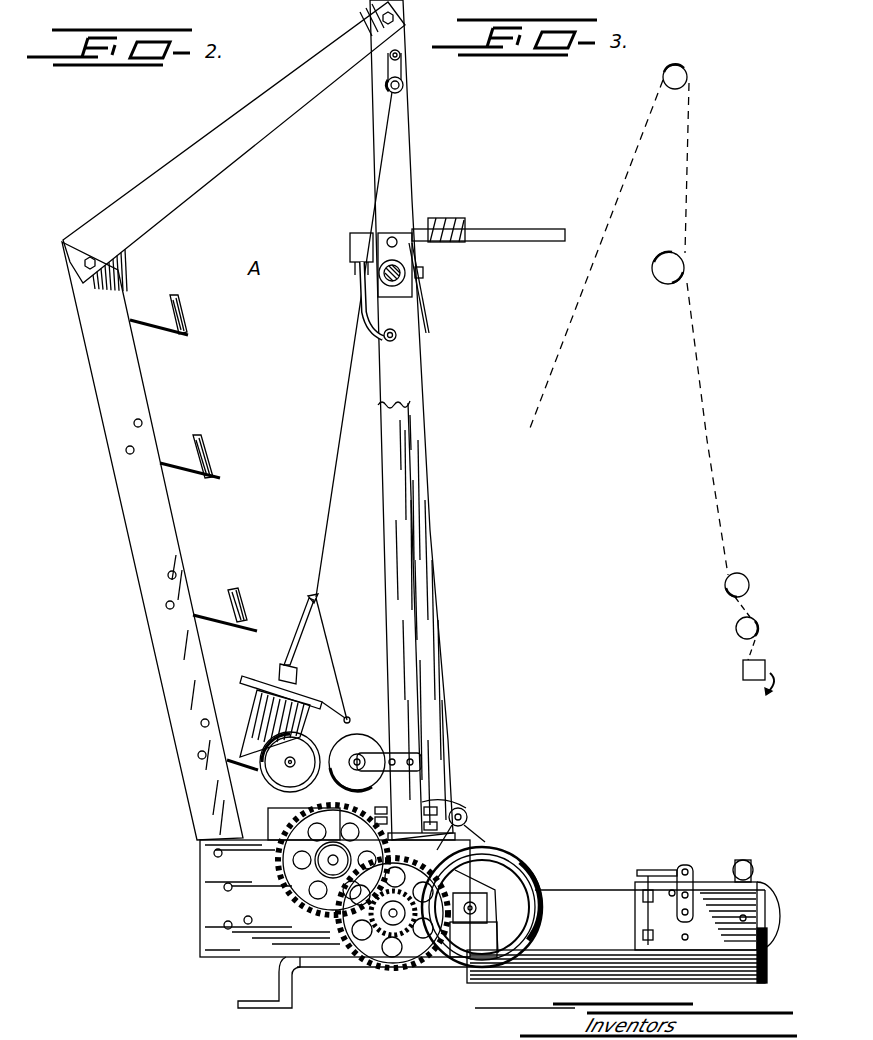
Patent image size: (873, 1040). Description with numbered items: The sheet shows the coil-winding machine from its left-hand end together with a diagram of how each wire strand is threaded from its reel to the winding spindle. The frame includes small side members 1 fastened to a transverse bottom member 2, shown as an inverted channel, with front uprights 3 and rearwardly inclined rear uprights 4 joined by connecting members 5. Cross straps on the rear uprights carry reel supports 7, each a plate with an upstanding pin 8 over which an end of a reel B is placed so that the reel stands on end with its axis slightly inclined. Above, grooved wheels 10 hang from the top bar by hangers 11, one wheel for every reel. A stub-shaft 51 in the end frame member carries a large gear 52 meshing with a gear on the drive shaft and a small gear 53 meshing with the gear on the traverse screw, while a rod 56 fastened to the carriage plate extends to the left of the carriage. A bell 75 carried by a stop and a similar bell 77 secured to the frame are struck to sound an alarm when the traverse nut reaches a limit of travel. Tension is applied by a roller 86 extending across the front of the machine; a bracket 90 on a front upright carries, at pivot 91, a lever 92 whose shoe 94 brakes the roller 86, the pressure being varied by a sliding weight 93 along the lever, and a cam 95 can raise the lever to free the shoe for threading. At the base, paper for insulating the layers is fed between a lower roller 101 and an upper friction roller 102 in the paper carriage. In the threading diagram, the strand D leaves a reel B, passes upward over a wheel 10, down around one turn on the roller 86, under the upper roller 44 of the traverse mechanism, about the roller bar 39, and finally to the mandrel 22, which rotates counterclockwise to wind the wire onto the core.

In FIG. 2, the side member 1 is at (212, 907).
In FIG. 2, the transverse bottom member 2 is at (322, 962).
In FIG. 2, the front upright 3 is at (390, 182).
In FIG. 2, the rear upright 4 is at (140, 568).
In FIG. 2, the connecting member 5 is at (260, 142).
In FIG. 2, the reel support 7 is at (243, 631).
In FIG. 2, the upstanding pin 8 is at (245, 616).
In FIG. 2, the grooved wheel 10 is at (404, 86).
In FIG. 3, the grooved wheel 10 is at (677, 89).
In FIG. 2, the hanger 11 is at (401, 64).
In FIG. 3, the mandrel 22 is at (762, 665).
In FIG. 3, the roller bar 39 is at (739, 634).
In FIG. 3, the roller 44 is at (776, 555).
In FIG. 2, the stub-shaft 51 is at (390, 918).
In FIG. 2, the large gear 52 is at (412, 875).
In FIG. 2, the small gear 53 is at (395, 916).
In FIG. 2, the rod 56 is at (298, 883).
In FIG. 2, the bell 75 is at (282, 775).
In FIG. 2, the bell 77 is at (363, 733).
In FIG. 2, the tension roller 86 is at (388, 294).
In FIG. 3, the tension roller 86 is at (666, 279).
In FIG. 2, the bracket 90 is at (370, 340).
In FIG. 2, the pivot 91 is at (363, 237).
In FIG. 2, the lever 92 is at (498, 233).
In FIG. 2, the sliding weight 93 is at (448, 222).
In FIG. 2, the shoe 94 is at (397, 250).
In FIG. 2, the cam 95 is at (418, 303).
In FIG. 2, the lower roller 101 is at (767, 907).
In FIG. 2, the upper friction roller 102 is at (756, 850).
In FIG. 2, the reel B is at (253, 715).
In FIG. 3, the cable D is at (707, 440).